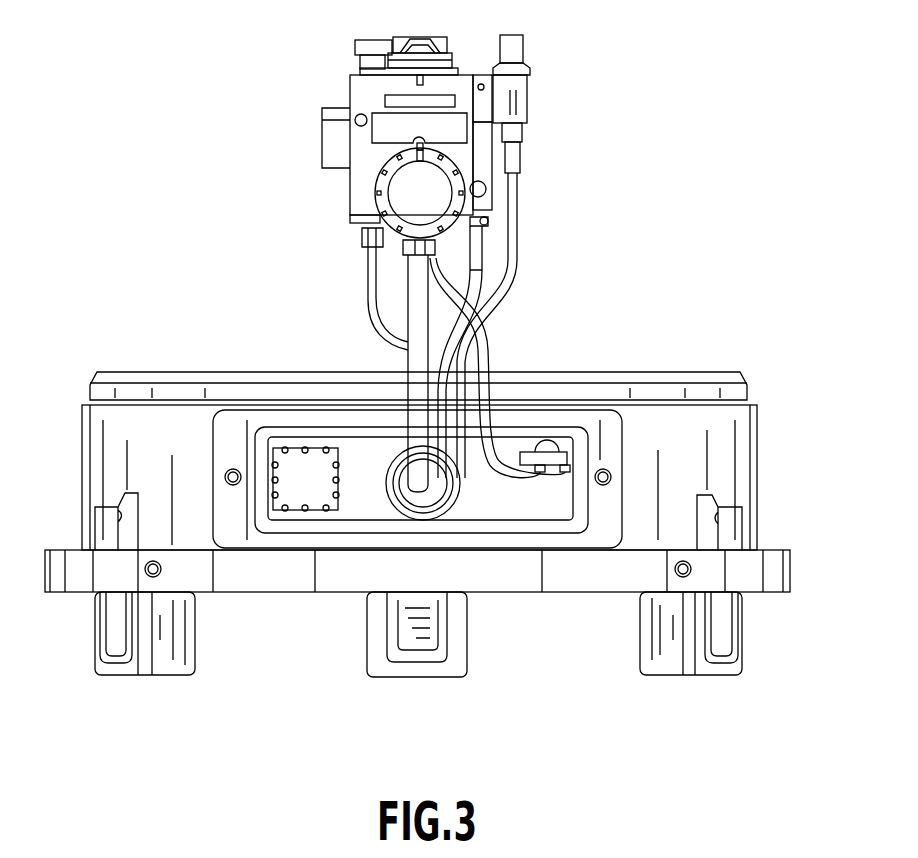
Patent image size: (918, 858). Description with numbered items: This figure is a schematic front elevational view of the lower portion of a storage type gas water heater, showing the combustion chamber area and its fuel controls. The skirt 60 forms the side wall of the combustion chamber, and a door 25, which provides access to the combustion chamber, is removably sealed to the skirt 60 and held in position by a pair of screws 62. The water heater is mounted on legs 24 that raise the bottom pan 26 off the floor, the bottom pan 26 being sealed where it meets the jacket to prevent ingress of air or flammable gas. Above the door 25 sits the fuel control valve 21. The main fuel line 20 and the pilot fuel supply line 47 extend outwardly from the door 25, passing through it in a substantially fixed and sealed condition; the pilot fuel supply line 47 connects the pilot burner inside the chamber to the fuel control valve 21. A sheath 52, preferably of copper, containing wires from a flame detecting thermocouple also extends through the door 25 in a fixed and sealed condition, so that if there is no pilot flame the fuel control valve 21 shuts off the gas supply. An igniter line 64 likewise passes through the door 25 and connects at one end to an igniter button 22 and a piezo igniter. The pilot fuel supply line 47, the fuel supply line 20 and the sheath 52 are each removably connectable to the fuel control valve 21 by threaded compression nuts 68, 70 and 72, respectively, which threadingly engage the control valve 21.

The main fuel line 20 is at (408, 306).
The fuel control valve 21 is at (348, 78).
The igniter button 22 is at (527, 100).
The legs 24 is at (95, 665).
The door 25 is at (225, 436).
The bottom pan 26 is at (78, 583).
The pilot fuel supply line 47 is at (450, 362).
The sheath 52 is at (390, 337).
The skirt 60 is at (100, 469).
The screws 62 is at (233, 486).
The igniter line 64 is at (430, 497).
The compression nut 68 is at (488, 224).
The compression nut 70 is at (402, 252).
The compression nut 72 is at (360, 238).